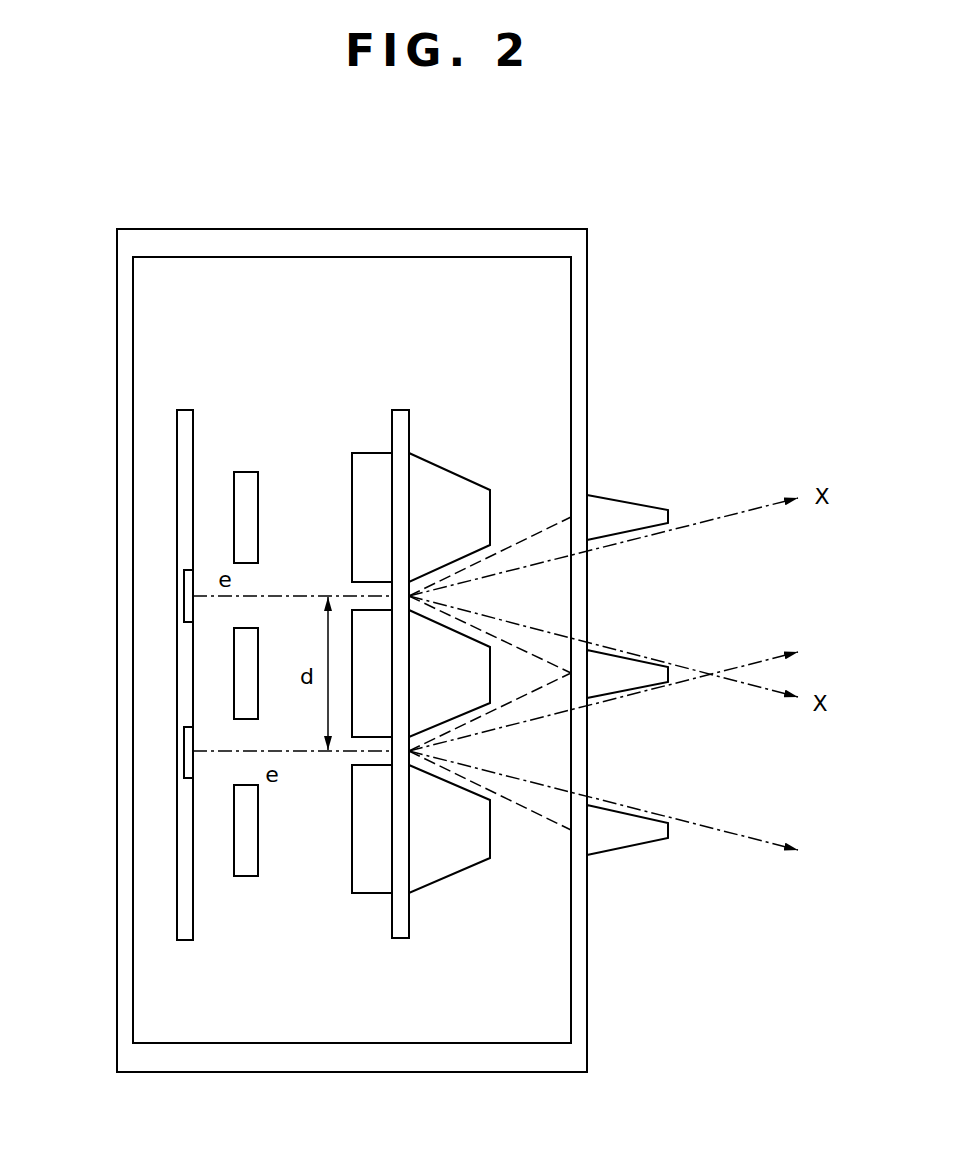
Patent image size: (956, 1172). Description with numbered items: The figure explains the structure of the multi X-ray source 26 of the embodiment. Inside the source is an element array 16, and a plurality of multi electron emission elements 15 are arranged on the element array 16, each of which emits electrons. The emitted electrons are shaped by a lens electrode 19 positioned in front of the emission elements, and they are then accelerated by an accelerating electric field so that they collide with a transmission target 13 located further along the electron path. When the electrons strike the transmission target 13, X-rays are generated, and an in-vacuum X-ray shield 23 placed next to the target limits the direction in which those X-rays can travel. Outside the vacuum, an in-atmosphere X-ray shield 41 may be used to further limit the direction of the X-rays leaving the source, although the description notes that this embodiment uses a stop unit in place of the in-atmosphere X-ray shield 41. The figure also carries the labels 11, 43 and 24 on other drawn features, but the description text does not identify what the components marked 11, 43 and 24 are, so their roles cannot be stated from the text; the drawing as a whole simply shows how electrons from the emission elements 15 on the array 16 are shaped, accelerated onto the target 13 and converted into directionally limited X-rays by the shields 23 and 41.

The vacuum chamber 11 is at (318, 257).
The multi X-ray source 26 is at (474, 229).
The element array 16 is at (178, 510).
The multi electron emission element 15 is at (185, 748).
The lens electrode 19 is at (243, 880).
The extraction electrode 43 is at (352, 468).
The transmission target 13 is at (412, 922).
The in-vacuum X-ray shield 23 is at (450, 471).
The electron beam 24 is at (497, 556).
The in-atmosphere X-ray shield 41 is at (630, 845).